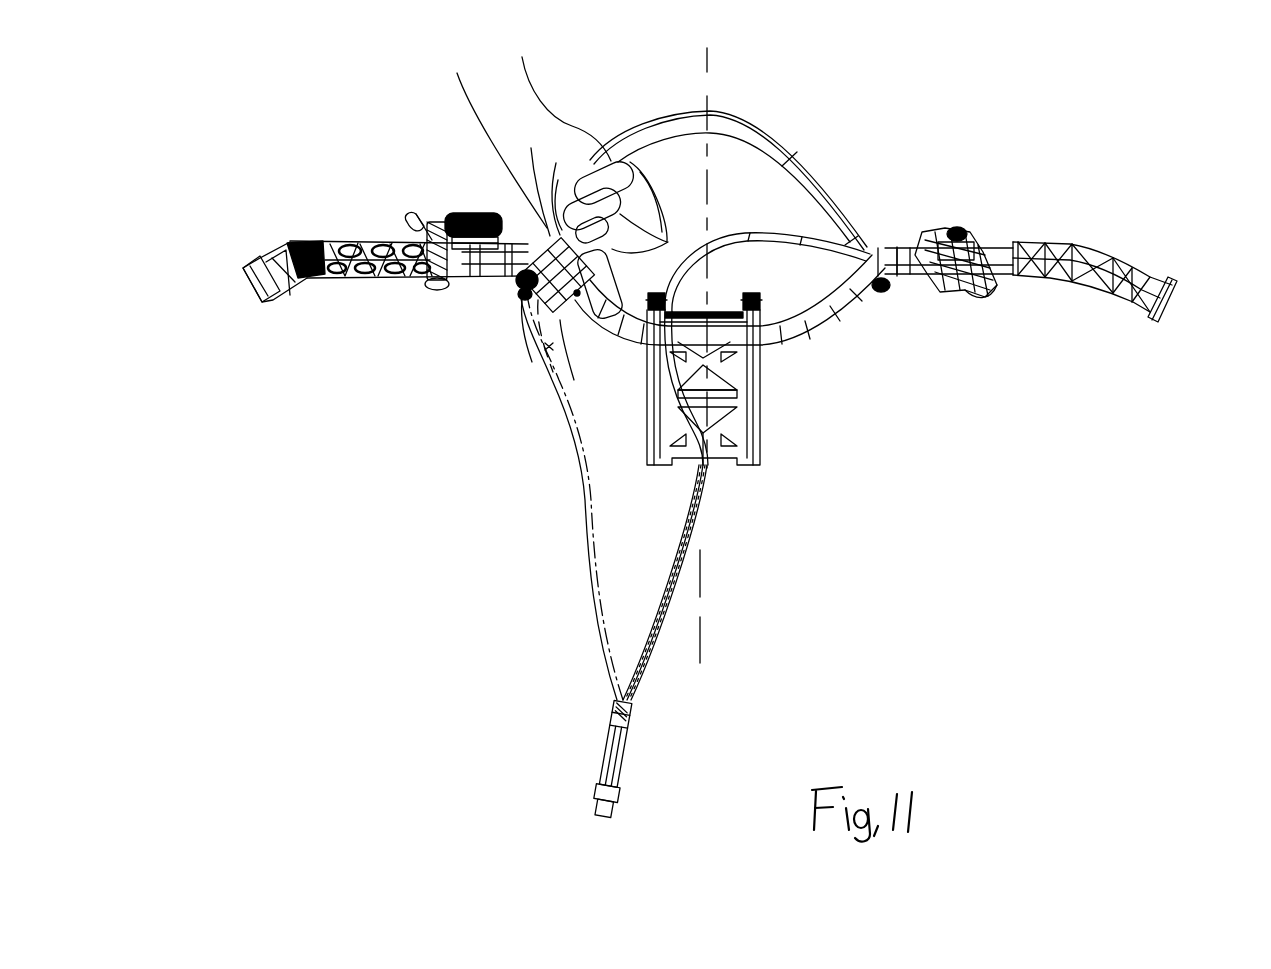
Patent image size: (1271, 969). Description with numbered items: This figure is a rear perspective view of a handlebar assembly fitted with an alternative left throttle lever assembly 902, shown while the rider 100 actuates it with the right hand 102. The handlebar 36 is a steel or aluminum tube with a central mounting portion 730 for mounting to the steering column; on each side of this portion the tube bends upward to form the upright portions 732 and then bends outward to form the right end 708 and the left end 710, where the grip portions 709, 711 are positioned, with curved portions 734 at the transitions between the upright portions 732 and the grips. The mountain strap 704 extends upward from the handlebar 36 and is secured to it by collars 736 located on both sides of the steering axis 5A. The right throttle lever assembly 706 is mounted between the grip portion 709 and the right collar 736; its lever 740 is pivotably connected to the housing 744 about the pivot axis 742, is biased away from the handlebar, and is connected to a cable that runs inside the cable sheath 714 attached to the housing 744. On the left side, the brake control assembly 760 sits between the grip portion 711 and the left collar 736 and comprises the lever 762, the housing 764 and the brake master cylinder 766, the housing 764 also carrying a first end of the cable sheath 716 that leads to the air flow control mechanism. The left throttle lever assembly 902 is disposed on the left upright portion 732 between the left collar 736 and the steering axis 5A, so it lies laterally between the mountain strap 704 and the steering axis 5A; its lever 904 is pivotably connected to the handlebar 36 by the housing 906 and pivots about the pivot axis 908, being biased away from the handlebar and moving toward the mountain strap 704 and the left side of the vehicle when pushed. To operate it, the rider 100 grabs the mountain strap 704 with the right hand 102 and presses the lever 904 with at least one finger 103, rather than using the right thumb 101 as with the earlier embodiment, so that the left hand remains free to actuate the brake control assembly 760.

The rider 100 is at (522, 81).
The right thumb 101 is at (547, 221).
The right hand 102 is at (577, 130).
The fingers 103 is at (669, 241).
The mountain strap 704 is at (738, 128).
The central mounting portion 730 is at (724, 300).
The upright portions 732 is at (601, 345).
The handlebar 36 is at (806, 345).
The cable sheath 714 is at (688, 539).
The cable sheath 716 is at (590, 544).
The steering axis 5A is at (700, 577).
The brake control assembly 760 is at (447, 206).
The left end 710 is at (257, 287).
The grip portion 711 is at (308, 242).
The lever 762 is at (312, 286).
The housing 764 is at (433, 240).
The brake master cylinder 766 is at (470, 212).
The curved portions 734 is at (517, 276).
The collars 736 is at (515, 298).
The lever 904 is at (594, 266).
The left throttle lever assembly 902 is at (552, 378).
The housing 906 is at (527, 332).
The pivot axis 908 is at (572, 378).
The right throttle lever assembly 706 is at (950, 230).
The pivot axis 742 is at (968, 237).
The housing 744 is at (975, 250).
The lever 740 is at (975, 296).
The grip portion 709 is at (1085, 246).
The right end 708 is at (1168, 294).